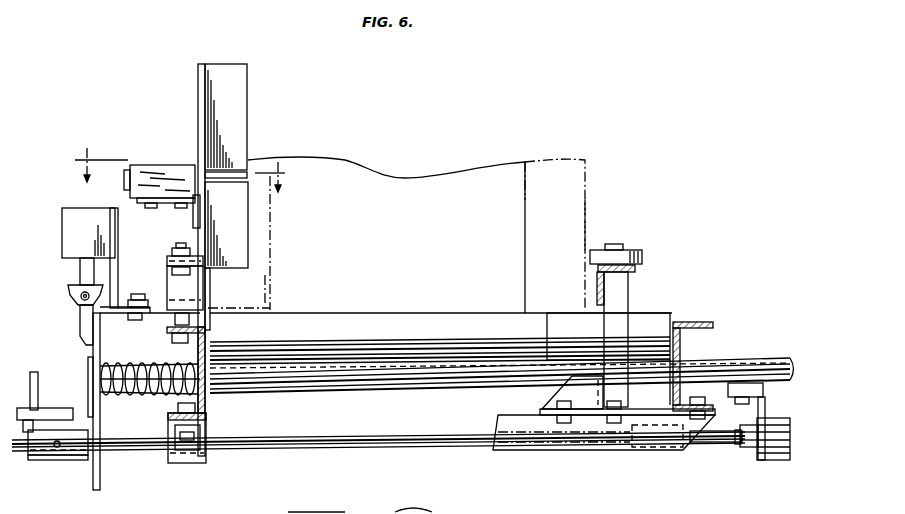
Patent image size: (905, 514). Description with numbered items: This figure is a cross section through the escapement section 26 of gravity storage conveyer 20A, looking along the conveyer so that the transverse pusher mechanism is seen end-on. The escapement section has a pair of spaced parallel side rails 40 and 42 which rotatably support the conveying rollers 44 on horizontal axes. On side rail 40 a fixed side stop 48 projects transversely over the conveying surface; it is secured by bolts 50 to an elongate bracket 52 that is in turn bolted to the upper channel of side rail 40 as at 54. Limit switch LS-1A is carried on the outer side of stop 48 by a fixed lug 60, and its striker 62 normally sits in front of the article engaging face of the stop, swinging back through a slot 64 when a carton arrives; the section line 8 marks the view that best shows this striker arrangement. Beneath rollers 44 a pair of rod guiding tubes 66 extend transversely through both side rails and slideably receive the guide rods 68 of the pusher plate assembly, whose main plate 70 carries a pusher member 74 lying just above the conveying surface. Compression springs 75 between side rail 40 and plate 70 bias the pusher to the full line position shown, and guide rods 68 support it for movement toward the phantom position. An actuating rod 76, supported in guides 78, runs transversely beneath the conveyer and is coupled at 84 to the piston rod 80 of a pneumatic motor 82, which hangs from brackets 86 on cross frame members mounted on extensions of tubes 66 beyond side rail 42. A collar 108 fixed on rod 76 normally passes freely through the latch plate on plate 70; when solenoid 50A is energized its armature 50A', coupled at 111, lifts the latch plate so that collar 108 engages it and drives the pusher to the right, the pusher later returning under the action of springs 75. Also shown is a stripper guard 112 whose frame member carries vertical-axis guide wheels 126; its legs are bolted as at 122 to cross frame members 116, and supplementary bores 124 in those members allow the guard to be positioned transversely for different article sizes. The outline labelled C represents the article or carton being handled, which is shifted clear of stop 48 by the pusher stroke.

The side stop 48 is at (247, 120).
The striker 62 is at (244, 173).
The slot 64 is at (236, 184).
The section line 8- 8 is at (180, 177).
The limit switch LS-1A is at (152, 166).
The fixed lug 60 is at (161, 202).
The latch operating solenoid 50A is at (81, 258).
The solenoid armature 50A' is at (54, 270).
The armature coupling 111 is at (70, 297).
The main plate 70 is at (97, 349).
The bolts 50 is at (181, 248).
The elongate bracket 52 is at (168, 274).
The bracket bolt 54 is at (167, 323).
The pusher member 74 is at (211, 291).
The compression spring 75 is at (150, 356).
The guide rods 68 is at (135, 395).
The side rail 40 is at (207, 398).
The storage conveyer 20A is at (600, 130).
The cut line C is at (528, 172).
The conveying rollers 44 is at (392, 313).
The rod guiding tubes 66 is at (393, 390).
The actuating rod 76 is at (354, 447).
The guides 78 is at (197, 463).
The collar 108 is at (73, 460).
The guide wheels 126 is at (640, 252).
The guard 112 is at (642, 277).
The escapement section 26 is at (617, 229).
The side rail 42 is at (688, 323).
The supplementary bores 124 is at (540, 409).
The bolts 122 is at (596, 401).
The cross frame members 116 is at (568, 450).
The coupling 84 is at (652, 446).
The piston rod 80 is at (720, 445).
The brackets 86 is at (762, 410).
The pneumatic motor 82 is at (770, 461).